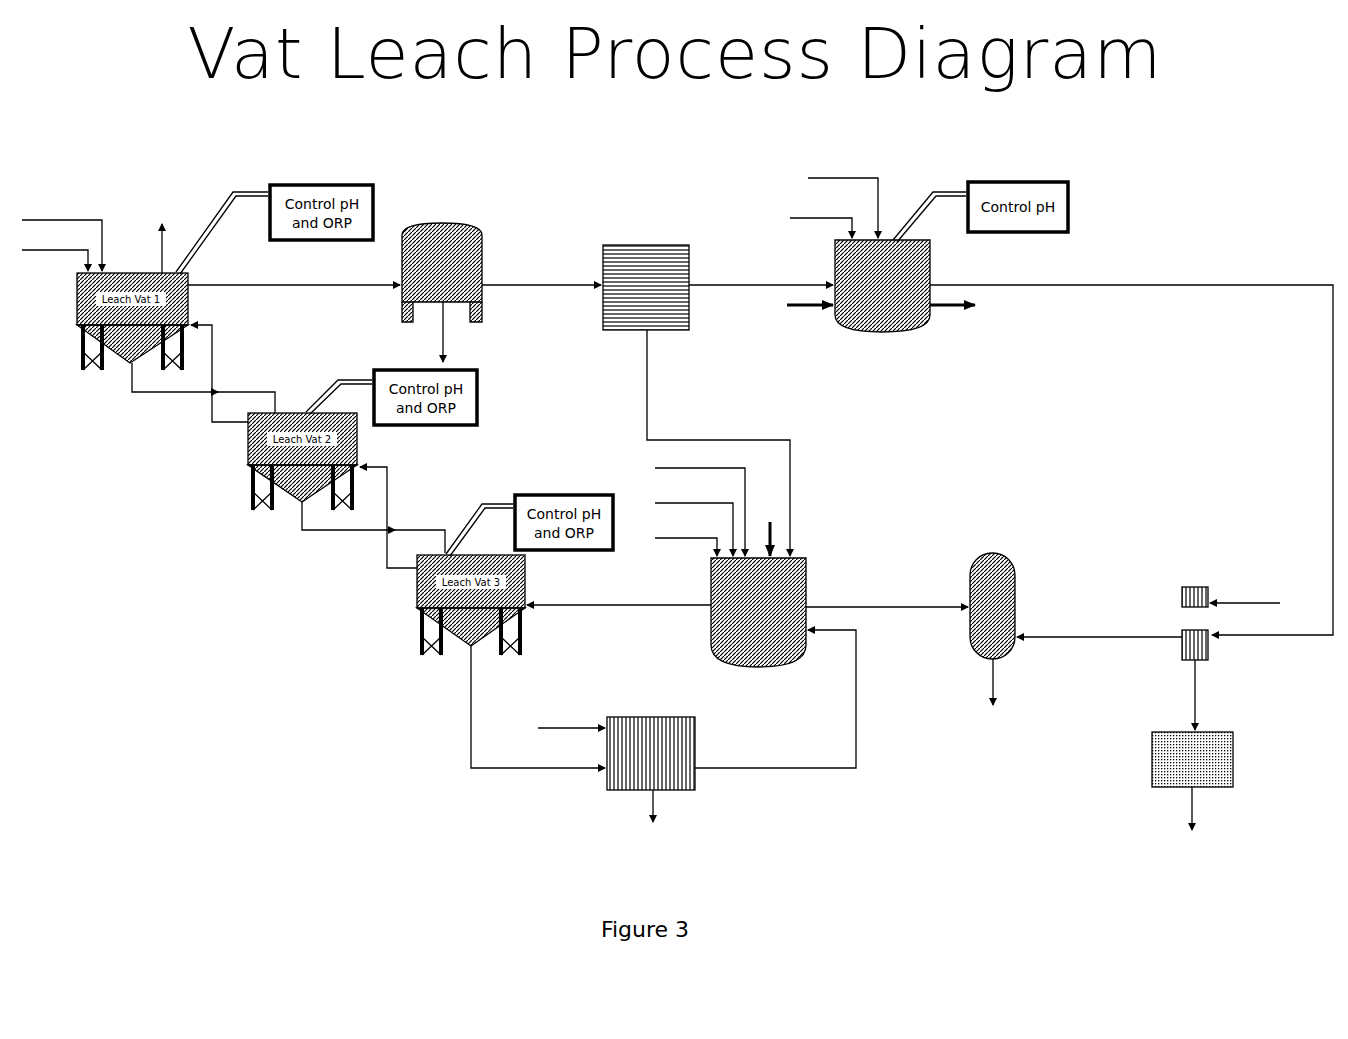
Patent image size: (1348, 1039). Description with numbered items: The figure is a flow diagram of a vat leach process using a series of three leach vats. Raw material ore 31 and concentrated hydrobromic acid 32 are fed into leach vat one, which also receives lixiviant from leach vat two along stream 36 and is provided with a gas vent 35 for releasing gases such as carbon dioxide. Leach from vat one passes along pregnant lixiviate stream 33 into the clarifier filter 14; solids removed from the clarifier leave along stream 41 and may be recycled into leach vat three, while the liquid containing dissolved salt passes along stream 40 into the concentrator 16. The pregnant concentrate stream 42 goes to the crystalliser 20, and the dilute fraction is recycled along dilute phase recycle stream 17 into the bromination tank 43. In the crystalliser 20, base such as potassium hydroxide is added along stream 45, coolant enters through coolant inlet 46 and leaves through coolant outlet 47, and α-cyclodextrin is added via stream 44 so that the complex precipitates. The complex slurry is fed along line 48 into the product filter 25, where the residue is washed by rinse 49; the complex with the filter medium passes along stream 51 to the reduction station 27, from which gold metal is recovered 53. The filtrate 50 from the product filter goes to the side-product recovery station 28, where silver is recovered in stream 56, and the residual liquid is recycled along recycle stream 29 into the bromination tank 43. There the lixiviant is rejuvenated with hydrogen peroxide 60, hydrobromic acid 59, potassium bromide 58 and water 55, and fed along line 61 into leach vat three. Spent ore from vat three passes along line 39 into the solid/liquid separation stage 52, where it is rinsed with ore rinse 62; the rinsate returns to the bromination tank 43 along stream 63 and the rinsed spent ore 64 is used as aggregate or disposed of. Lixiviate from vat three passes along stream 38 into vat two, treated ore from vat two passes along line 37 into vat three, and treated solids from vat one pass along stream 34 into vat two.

The clarifier filter 14 is at (442, 272).
The concentrator 16 is at (646, 287).
The dilute phase recycle stream 17 is at (718, 443).
The crystalliser 20 is at (882, 286).
The product filter 25 is at (1195, 623).
The reduction station 27 is at (1192, 759).
The side-product recovery station 28 is at (992, 606).
The residual liquid recycle stream 29 is at (887, 596).
The raw material ore addition 31 is at (62, 236).
The concentrated hydrobromic acid addition 32 is at (55, 251).
The pregnant lixiviate stream 33 is at (294, 276).
The treated solid output stream 34 is at (203, 394).
The gas vent 35 is at (176, 237).
The lixiviant stream from leach vat two 36 is at (219, 373).
The ore output stream from leach vat two 37 is at (372, 530).
The lixiviate stream from leach vat three 38 is at (388, 517).
The spent ore stream 39 is at (538, 707).
The potassium gold bromide stream 40 is at (541, 275).
The solids from clarifier 41 is at (427, 332).
The pregnant concentrate stream 42 is at (761, 276).
The bromination tank 43 is at (758, 612).
The α-cyclodextrin addition stream 44 is at (843, 199).
The base neutralisation stream 45 is at (821, 218).
The coolant inlet 46 is at (808, 319).
The coolant outlet 47 is at (952, 319).
The complex slurry line 48 is at (1131, 450).
The rinse after filtration 49 is at (1245, 593).
The product filter filtrate 50 is at (1099, 627).
The filter medium complex stream 51 is at (1208, 695).
The solid/liquid separation stage 52 is at (651, 753).
The gold metal recovery 53 is at (1206, 808).
The water addition 55 is at (772, 526).
The silver recovery stream 56 is at (1008, 682).
The potassium bromide addition 58 is at (685, 507).
The hydrobromic acid replenishment 59 is at (679, 524).
The hydrogen peroxide addition 60 is at (671, 542).
The rejuvenated lixiviant stream 61 is at (619, 594).
The ore rinse 62 is at (571, 718).
The ore rinsate stream 63 is at (775, 699).
The rinsed spent ore 64 is at (668, 806).